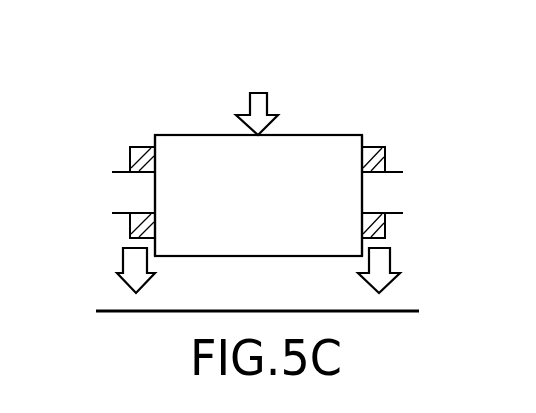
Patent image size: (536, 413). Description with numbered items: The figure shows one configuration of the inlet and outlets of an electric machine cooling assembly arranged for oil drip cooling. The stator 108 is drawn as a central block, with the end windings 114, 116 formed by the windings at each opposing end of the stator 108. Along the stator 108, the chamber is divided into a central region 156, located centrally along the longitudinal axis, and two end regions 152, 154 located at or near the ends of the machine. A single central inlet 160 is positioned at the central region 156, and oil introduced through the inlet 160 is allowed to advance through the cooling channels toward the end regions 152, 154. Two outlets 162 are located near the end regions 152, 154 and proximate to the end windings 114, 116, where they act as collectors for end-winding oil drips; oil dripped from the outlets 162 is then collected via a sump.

The stator 108 is at (248, 238).
The end winding 114 is at (137, 160).
The end winding 116 is at (372, 226).
The end region 152 is at (168, 120).
The end region 154 is at (353, 115).
The central region 156 is at (288, 118).
The inlet 160 is at (253, 103).
The outlet 162 is at (133, 270).